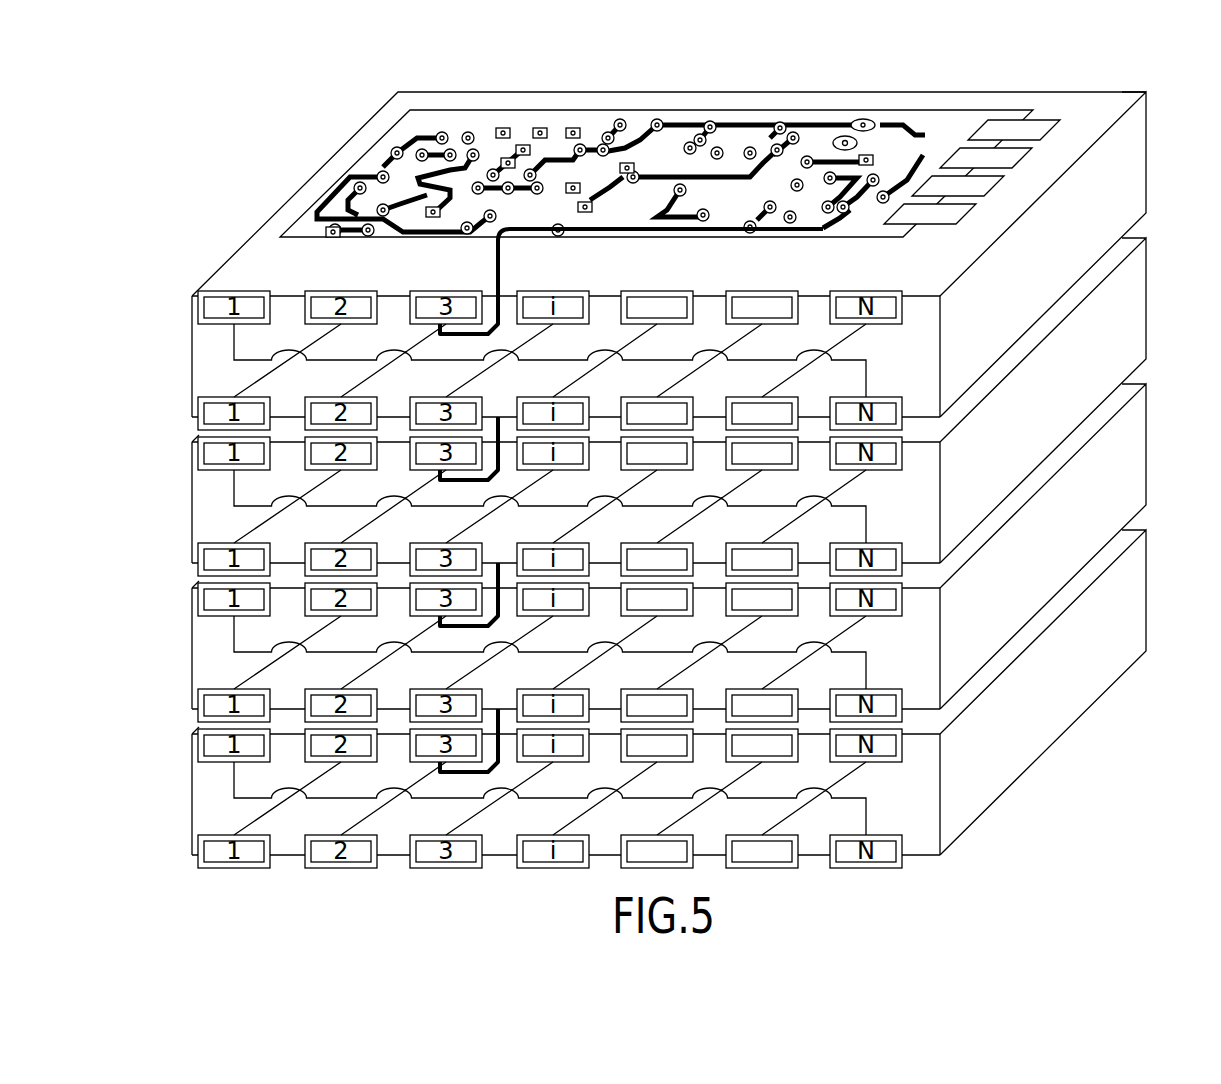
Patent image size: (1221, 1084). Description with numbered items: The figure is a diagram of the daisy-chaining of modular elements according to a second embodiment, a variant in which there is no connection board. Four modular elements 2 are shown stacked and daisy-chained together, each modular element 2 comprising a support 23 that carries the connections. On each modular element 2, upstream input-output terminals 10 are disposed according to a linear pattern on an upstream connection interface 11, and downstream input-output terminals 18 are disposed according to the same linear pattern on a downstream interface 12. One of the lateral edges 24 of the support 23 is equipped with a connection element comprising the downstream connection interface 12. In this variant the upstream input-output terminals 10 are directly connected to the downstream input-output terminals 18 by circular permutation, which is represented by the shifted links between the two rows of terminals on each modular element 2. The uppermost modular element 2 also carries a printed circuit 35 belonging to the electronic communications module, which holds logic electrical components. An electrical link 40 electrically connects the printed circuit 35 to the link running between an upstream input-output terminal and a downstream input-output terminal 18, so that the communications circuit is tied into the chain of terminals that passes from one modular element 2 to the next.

The modular element 2 is at (699, 473).
The upstream input-output terminal 10 is at (678, 551).
The upstream connection interface 11 is at (178, 286).
The downstream interface 12 is at (180, 392).
The downstream input-output terminal 18 is at (213, 423).
The support 23 is at (1093, 187).
The lateral edge 24 is at (907, 362).
The printed circuit 35 is at (845, 137).
The electrical link 40 is at (500, 263).